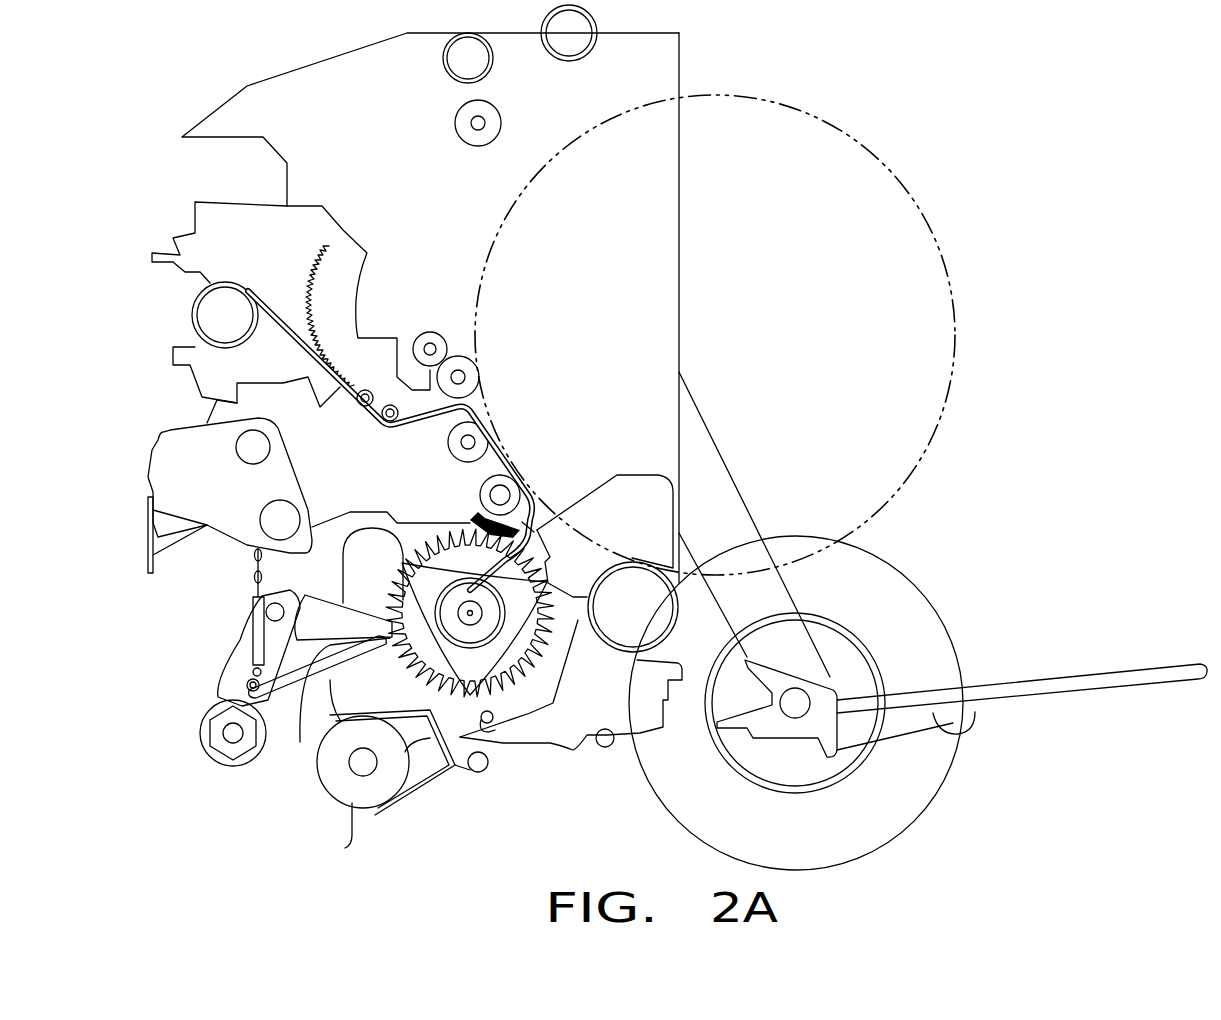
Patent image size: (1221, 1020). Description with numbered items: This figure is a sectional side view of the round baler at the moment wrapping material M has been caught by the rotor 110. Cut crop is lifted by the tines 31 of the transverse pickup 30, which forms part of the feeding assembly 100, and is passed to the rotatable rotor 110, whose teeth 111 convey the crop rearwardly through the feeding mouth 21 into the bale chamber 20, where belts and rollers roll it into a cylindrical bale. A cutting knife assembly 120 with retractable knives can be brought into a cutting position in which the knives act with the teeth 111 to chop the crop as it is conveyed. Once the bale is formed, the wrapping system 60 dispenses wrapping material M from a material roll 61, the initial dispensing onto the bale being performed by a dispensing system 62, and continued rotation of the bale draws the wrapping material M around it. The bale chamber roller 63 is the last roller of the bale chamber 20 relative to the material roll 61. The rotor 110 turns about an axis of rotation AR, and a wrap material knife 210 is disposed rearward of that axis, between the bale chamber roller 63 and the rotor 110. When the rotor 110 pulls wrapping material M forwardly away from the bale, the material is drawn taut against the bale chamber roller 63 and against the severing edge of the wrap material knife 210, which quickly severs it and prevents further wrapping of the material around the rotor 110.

The bale chamber 20 is at (476, 230).
The feeding mouth 21 is at (538, 548).
The pickup 30 is at (388, 817).
The tines 31 is at (350, 830).
The wrapping system 60 is at (250, 352).
The material roll 61 is at (205, 318).
The dispensing system 62 is at (330, 313).
The bale chamber roller 63 is at (500, 495).
The feeding assembly 100 is at (440, 505).
The rotor 110 is at (420, 581).
The teeth 111 is at (548, 632).
The cutting knife assembly 120 is at (534, 716).
The wrap material knife 210 is at (512, 530).
The axis of rotation AR is at (478, 620).
The wrapping material M is at (528, 527).